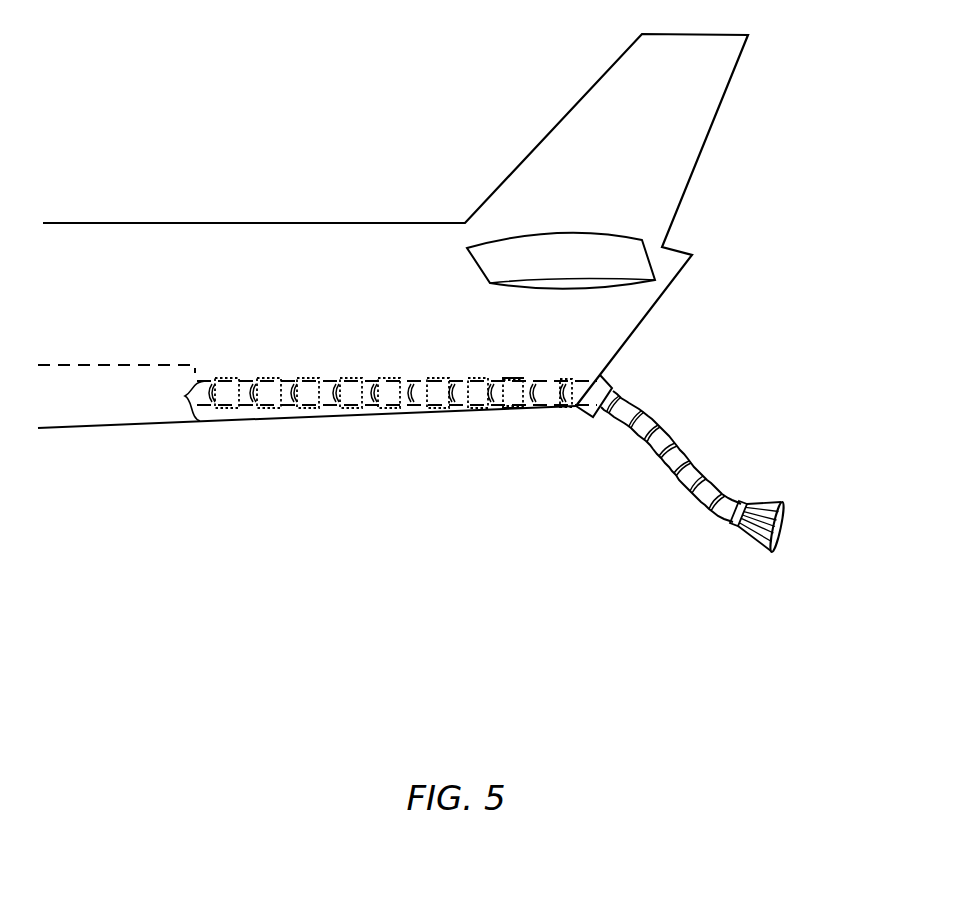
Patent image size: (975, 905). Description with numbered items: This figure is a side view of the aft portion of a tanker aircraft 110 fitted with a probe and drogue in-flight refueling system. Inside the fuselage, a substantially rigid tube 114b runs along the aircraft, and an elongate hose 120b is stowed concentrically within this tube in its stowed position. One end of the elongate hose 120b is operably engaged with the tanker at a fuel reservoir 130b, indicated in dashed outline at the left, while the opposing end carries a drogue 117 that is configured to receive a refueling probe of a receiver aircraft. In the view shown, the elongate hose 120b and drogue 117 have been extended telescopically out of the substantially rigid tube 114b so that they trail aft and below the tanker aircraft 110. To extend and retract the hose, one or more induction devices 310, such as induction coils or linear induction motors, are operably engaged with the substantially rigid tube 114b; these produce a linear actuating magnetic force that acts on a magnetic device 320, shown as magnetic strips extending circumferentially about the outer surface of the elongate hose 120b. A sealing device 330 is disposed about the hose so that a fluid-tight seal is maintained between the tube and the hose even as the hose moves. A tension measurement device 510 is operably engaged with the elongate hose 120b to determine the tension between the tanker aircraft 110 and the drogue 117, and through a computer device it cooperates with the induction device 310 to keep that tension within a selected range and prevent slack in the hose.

The tanker aircraft 110 is at (208, 268).
The substantially rigid tube 114b is at (281, 380).
The fuel reservoir 130b is at (92, 410).
The sealing device 330 is at (331, 382).
The induction device 310 is at (430, 405).
The tension measurement device 510 is at (510, 410).
The elongate hose 120b is at (686, 482).
The magnetic device 320 is at (612, 390).
The drogue 117 is at (772, 491).